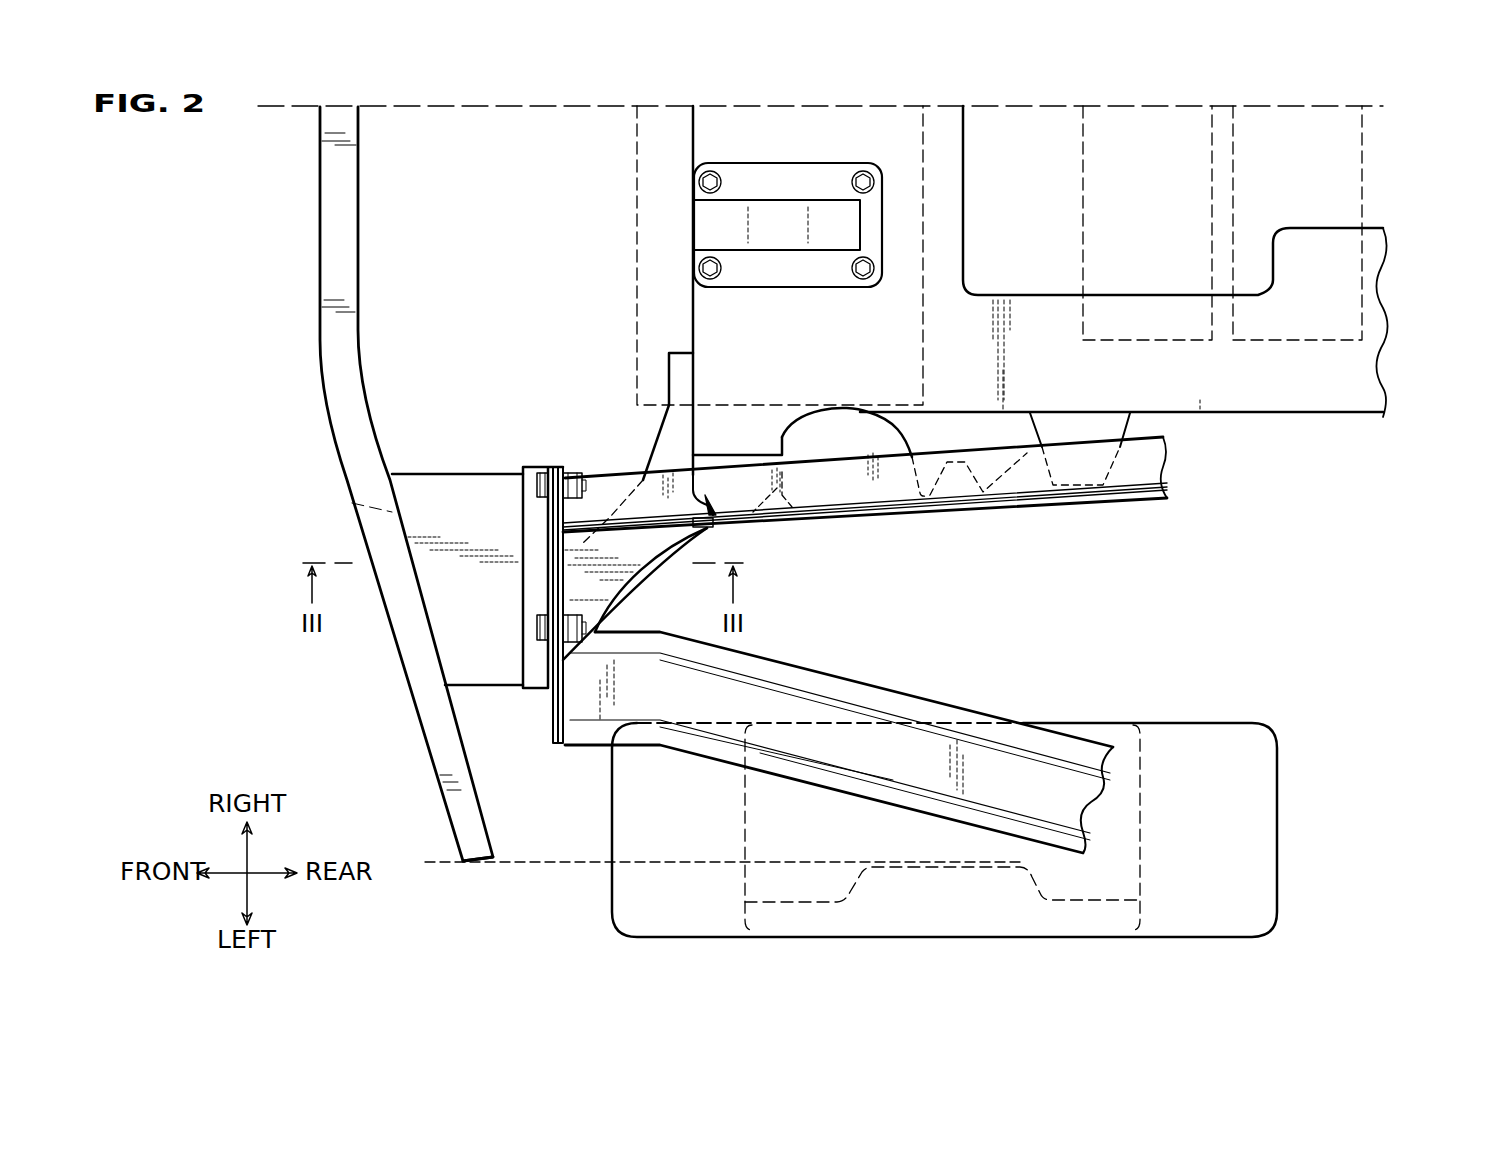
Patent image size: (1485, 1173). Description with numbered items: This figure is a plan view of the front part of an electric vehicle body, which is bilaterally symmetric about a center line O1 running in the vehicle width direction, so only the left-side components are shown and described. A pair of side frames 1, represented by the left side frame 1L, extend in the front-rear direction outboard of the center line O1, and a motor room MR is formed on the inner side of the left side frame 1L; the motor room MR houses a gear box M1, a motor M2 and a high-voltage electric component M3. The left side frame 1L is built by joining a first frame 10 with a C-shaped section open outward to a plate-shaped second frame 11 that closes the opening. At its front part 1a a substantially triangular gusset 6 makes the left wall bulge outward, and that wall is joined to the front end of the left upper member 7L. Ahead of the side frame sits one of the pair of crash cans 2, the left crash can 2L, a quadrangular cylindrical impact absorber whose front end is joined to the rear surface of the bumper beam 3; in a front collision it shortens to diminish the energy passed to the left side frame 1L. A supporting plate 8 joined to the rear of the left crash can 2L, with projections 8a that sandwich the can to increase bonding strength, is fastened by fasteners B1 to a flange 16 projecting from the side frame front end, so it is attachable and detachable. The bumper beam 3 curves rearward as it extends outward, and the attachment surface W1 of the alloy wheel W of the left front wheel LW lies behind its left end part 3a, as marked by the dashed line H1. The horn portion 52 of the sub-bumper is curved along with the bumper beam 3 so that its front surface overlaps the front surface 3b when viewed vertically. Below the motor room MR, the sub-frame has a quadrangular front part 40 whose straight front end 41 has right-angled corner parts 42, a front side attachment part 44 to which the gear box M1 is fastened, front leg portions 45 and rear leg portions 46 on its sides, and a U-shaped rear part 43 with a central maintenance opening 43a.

The center line O1 is at (1383, 106).
The bumper beam 3 is at (342, 188).
The left end part 3a is at (475, 847).
The front surface 3b is at (440, 748).
The horn portion 52 is at (344, 500).
The crash cans 2 is at (457, 542).
The left crash can 2L is at (437, 498).
The supporting plate 8 is at (545, 582).
The projections 8a is at (530, 505).
The fasteners B1 is at (546, 643).
The side frames 1 is at (881, 502).
The left side frame 1L is at (868, 528).
The front part 1a is at (622, 482).
The gusset 6 is at (630, 555).
The flange 16 is at (568, 590).
The corner parts 42 is at (690, 437).
The front leg portions 45 is at (780, 515).
The front side attachment part 44 is at (700, 227).
The front end 41 is at (693, 306).
The front part 40 is at (730, 340).
The rear part 43 is at (1303, 392).
The maintenance opening 43a is at (1018, 300).
The motor room MR is at (1188, 378).
The gear box M1 is at (636, 188).
The motor M2 is at (1082, 188).
The high-voltage electric component M3 is at (1365, 188).
The second frame 11 is at (970, 508).
The rear leg portions 46 is at (1040, 520).
The first frame 10 is at (1145, 463).
The left upper member 7L is at (805, 705).
The left front wheel LW is at (1250, 835).
The dashed line H1 is at (535, 875).
The attachment surface W1 is at (933, 867).
The alloy wheel W is at (967, 877).